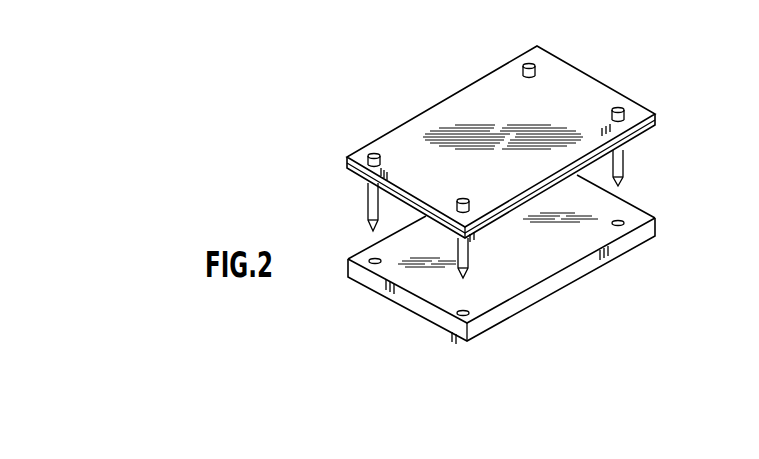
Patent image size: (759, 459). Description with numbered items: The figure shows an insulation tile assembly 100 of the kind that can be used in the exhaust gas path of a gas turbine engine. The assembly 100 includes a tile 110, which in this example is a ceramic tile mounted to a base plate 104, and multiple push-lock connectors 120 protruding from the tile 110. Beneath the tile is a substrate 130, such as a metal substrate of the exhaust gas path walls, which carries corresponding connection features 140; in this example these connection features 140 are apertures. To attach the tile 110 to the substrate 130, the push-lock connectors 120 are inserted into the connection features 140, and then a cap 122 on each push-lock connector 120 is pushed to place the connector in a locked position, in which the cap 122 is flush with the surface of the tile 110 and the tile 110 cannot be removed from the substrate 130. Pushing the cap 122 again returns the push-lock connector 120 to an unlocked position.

The insulation tile assembly 100 is at (442, 58).
The base plate 104 is at (650, 137).
The tile 110 is at (570, 100).
The push-lock connectors 120 is at (370, 213).
The cap 122 is at (370, 150).
The substrate 130 is at (585, 265).
The connection features 140 is at (370, 260).